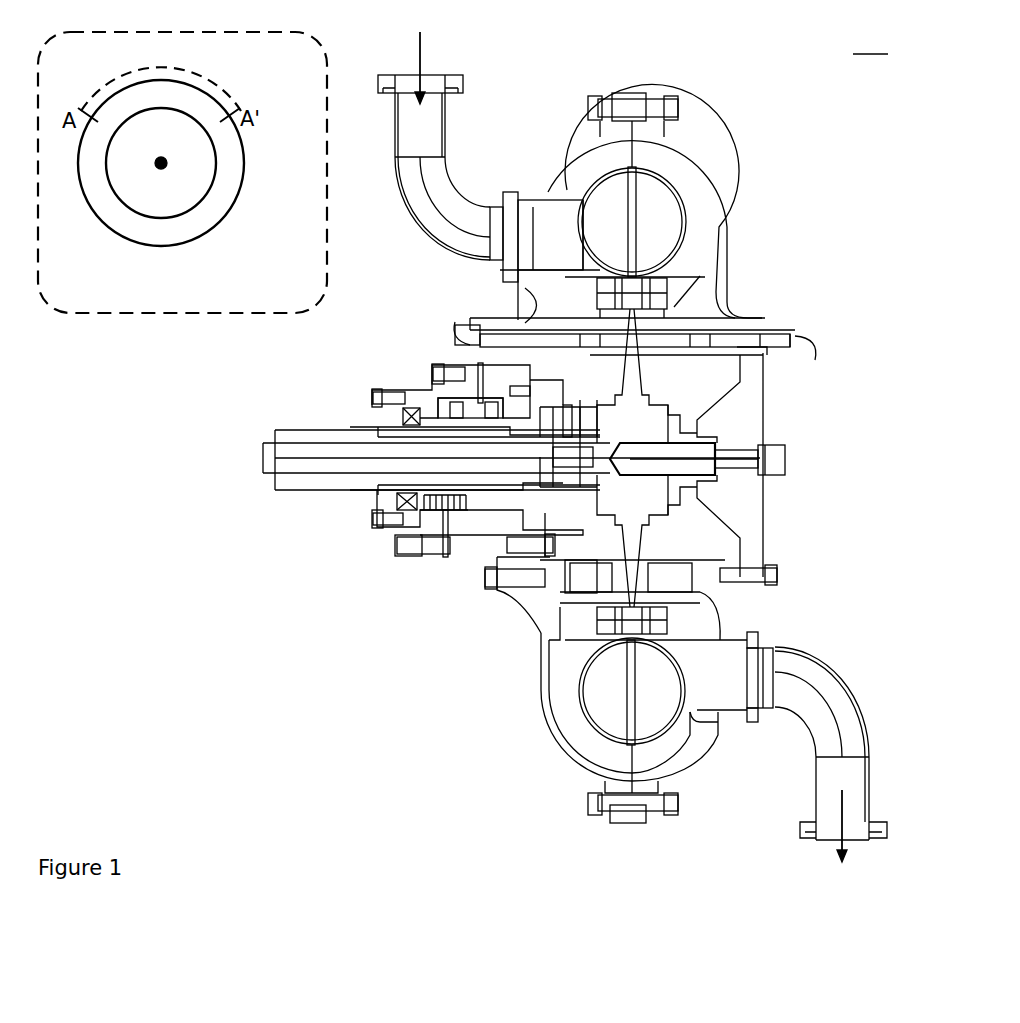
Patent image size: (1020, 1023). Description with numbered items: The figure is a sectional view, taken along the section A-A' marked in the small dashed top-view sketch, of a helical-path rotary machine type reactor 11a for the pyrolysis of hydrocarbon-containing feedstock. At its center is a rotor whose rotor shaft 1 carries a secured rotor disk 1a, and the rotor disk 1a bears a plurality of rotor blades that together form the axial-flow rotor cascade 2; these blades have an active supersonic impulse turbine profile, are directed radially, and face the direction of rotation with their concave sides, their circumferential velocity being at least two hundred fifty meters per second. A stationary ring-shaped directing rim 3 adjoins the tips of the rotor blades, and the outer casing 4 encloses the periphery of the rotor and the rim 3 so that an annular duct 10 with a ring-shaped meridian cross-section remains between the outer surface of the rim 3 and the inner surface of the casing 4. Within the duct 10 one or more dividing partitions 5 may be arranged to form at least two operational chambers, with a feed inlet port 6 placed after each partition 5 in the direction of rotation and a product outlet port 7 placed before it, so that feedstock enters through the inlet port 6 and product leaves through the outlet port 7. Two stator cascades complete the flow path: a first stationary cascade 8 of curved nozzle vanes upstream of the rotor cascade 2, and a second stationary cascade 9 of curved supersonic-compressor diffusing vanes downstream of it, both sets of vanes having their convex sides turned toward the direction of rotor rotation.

The rotor shaft 1 is at (290, 462).
The rotor disk 1a is at (637, 377).
The axial-flow cascade with rotor blades 2 is at (633, 291).
The directing rim 3 is at (685, 213).
The casing 4 is at (245, 168).
The dividing partitions 5 is at (533, 193).
The feed inlet port 6 is at (426, 70).
The product outlet port 7 is at (828, 843).
The first stationary cascade with nozzle vanes 8 is at (600, 622).
The second stationary cascade with diffusing vanes 9 is at (663, 625).
The duct with a vaneless space 10 is at (588, 165).
The rotary machine type reactor according to first embodiment 11a is at (873, 43).